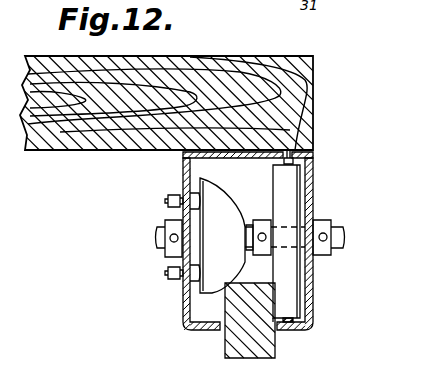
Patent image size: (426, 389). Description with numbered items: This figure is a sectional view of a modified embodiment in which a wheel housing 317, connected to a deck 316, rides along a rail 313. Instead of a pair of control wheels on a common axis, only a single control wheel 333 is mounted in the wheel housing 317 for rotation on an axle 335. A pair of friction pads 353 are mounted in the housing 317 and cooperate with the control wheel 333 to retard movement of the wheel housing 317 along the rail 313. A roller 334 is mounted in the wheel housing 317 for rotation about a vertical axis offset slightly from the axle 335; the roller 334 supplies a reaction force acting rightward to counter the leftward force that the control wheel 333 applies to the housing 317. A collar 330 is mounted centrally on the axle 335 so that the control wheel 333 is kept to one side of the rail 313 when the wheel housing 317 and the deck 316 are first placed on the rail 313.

The deck 316 is at (310, 65).
The wheel housing 317 is at (311, 182).
The control wheel 333 is at (186, 300).
The roller 334 is at (291, 300).
The collar 330 is at (264, 220).
The axle 335 is at (158, 231).
The friction pads 353 is at (190, 192).
The rail 313 is at (273, 352).